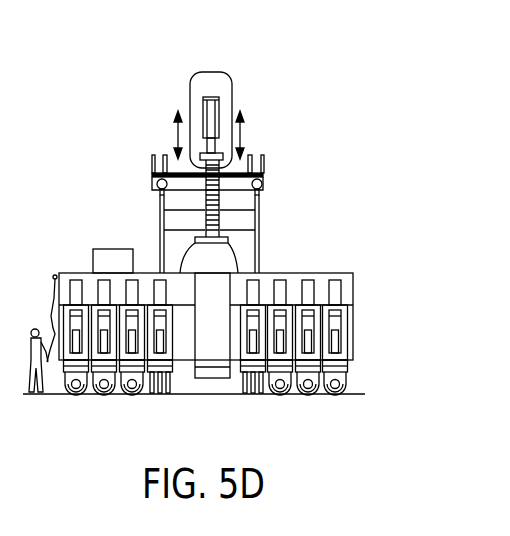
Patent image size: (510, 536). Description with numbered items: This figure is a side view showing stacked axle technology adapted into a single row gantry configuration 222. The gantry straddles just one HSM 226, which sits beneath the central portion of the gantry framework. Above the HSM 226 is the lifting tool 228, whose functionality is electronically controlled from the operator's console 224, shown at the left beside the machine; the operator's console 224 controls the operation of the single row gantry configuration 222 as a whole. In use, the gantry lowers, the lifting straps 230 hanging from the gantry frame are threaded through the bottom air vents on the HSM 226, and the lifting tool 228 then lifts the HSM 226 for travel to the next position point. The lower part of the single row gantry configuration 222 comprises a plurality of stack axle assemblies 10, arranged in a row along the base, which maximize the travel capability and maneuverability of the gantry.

The lifting tool 228 is at (232, 95).
The single row gantry configuration 222 is at (272, 181).
The lifting straps 230 is at (160, 213).
The HSM 226 is at (240, 238).
The operator's console 224 is at (53, 395).
The stack axle assemblies 10 is at (258, 395).